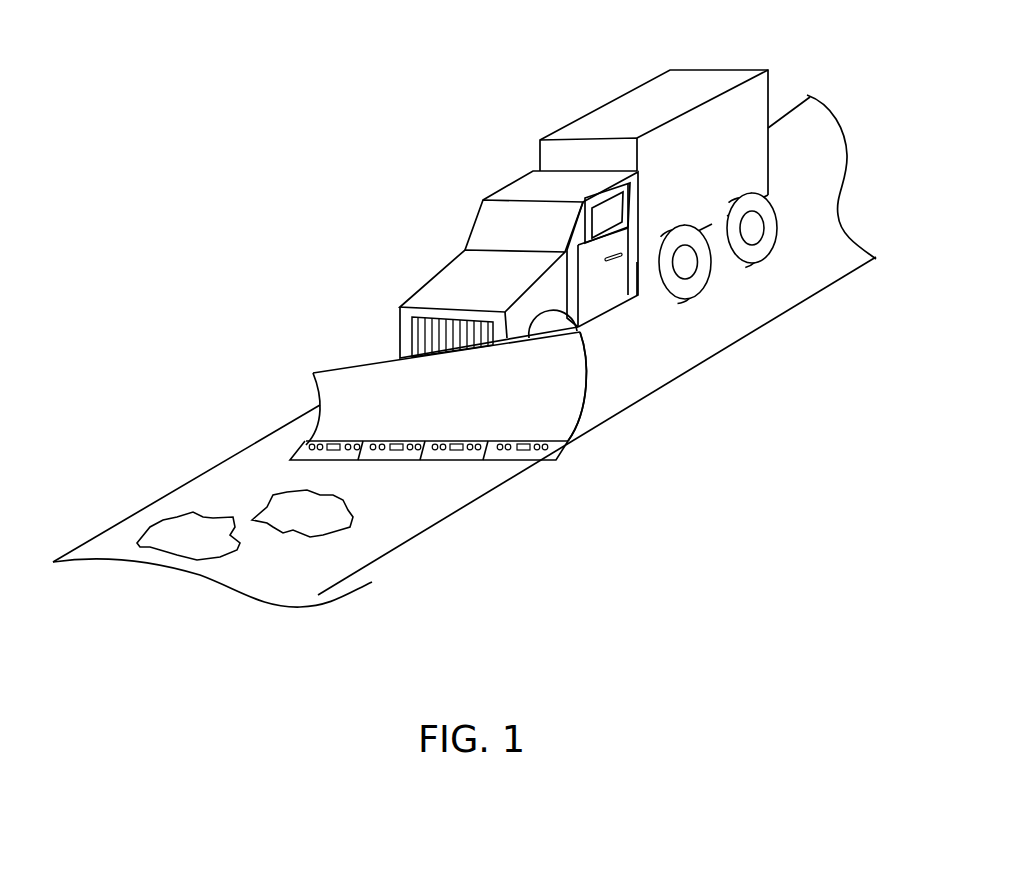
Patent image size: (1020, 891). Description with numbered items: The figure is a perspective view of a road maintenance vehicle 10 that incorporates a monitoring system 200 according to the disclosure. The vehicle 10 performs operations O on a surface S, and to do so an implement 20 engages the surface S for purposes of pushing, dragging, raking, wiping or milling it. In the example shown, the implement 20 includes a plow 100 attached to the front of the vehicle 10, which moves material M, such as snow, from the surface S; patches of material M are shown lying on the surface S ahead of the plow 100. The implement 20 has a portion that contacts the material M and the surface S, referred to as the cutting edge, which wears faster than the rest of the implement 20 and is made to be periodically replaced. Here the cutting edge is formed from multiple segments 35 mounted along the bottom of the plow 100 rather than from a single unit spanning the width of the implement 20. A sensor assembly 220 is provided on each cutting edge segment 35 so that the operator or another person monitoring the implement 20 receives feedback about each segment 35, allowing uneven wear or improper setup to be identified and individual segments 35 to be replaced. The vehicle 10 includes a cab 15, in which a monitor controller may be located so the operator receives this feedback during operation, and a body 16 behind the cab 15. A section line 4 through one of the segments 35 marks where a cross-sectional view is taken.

The monitoring system 200 is at (306, 155).
The vehicle 10 is at (426, 190).
The cab 15 is at (518, 216).
The cargo box 16 is at (562, 185).
The implement 20 is at (339, 364).
The sensor assembly 220 is at (537, 426).
The plow 100 is at (552, 474).
The segments 35 is at (322, 444).
The section line 4 is at (508, 471).
The surface S is at (230, 482).
The material M is at (245, 525).
The operations O is at (241, 337).